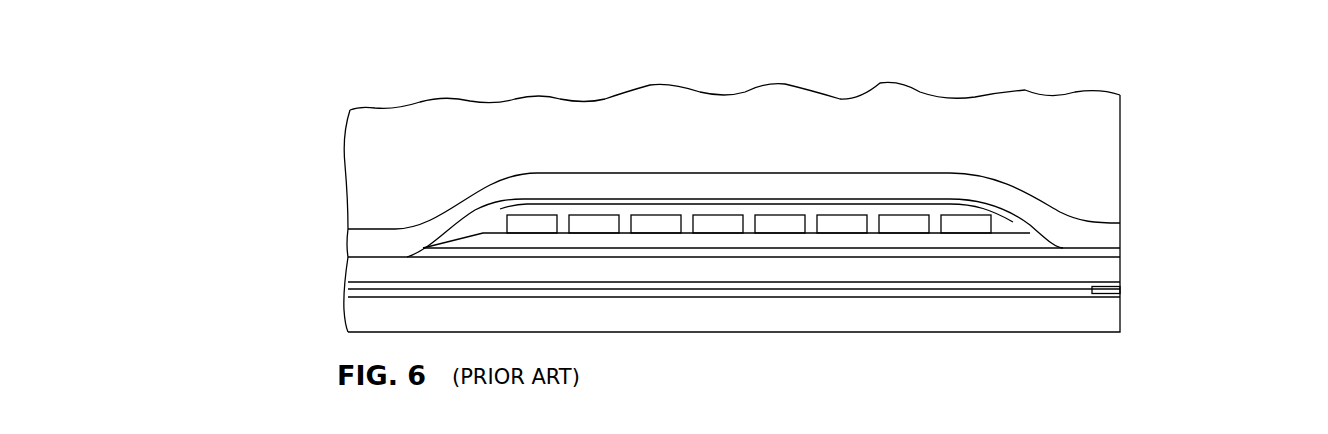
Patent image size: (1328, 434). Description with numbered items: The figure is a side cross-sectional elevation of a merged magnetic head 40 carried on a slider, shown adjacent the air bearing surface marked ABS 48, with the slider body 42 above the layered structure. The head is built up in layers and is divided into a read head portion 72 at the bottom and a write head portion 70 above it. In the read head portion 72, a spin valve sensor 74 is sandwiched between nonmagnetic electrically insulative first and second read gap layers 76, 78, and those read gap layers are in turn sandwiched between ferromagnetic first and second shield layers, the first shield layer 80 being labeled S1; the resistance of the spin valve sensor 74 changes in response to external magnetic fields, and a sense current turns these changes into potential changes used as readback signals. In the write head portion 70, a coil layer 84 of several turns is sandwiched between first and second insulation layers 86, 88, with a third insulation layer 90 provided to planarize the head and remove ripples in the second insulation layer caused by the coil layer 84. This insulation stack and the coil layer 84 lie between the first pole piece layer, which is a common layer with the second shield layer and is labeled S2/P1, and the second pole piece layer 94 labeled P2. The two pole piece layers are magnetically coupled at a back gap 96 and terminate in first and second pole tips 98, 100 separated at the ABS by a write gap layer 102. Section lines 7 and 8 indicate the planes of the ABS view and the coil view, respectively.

The merged magnetic head 40 is at (326, 118).
The substrate / slider 42 is at (1107, 125).
The air bearing surface (ABS) 48 is at (1120, 332).
The write head portion 70 is at (337, 282).
The read head portion 72 is at (337, 332).
The spin valve sensor 74 is at (1120, 290).
The first read gap layer 76 is at (790, 296).
The second read gap layer 78 is at (765, 282).
The first shield layer 80 is at (872, 318).
The coil layer 84 is at (713, 220).
The first insulation layer 86 is at (661, 242).
The second insulation layer 88 is at (1012, 225).
The third insulation layer 90 is at (568, 200).
The second pole piece layer 94 is at (888, 183).
The back gap 96 is at (380, 255).
The first pole tip 98 is at (1120, 272).
The second pole tip 100 is at (1120, 232).
The write gap layer 102 is at (1120, 250).
The ABS view section line 7 is at (1250, 103).
The section line 8 is at (400, 88).